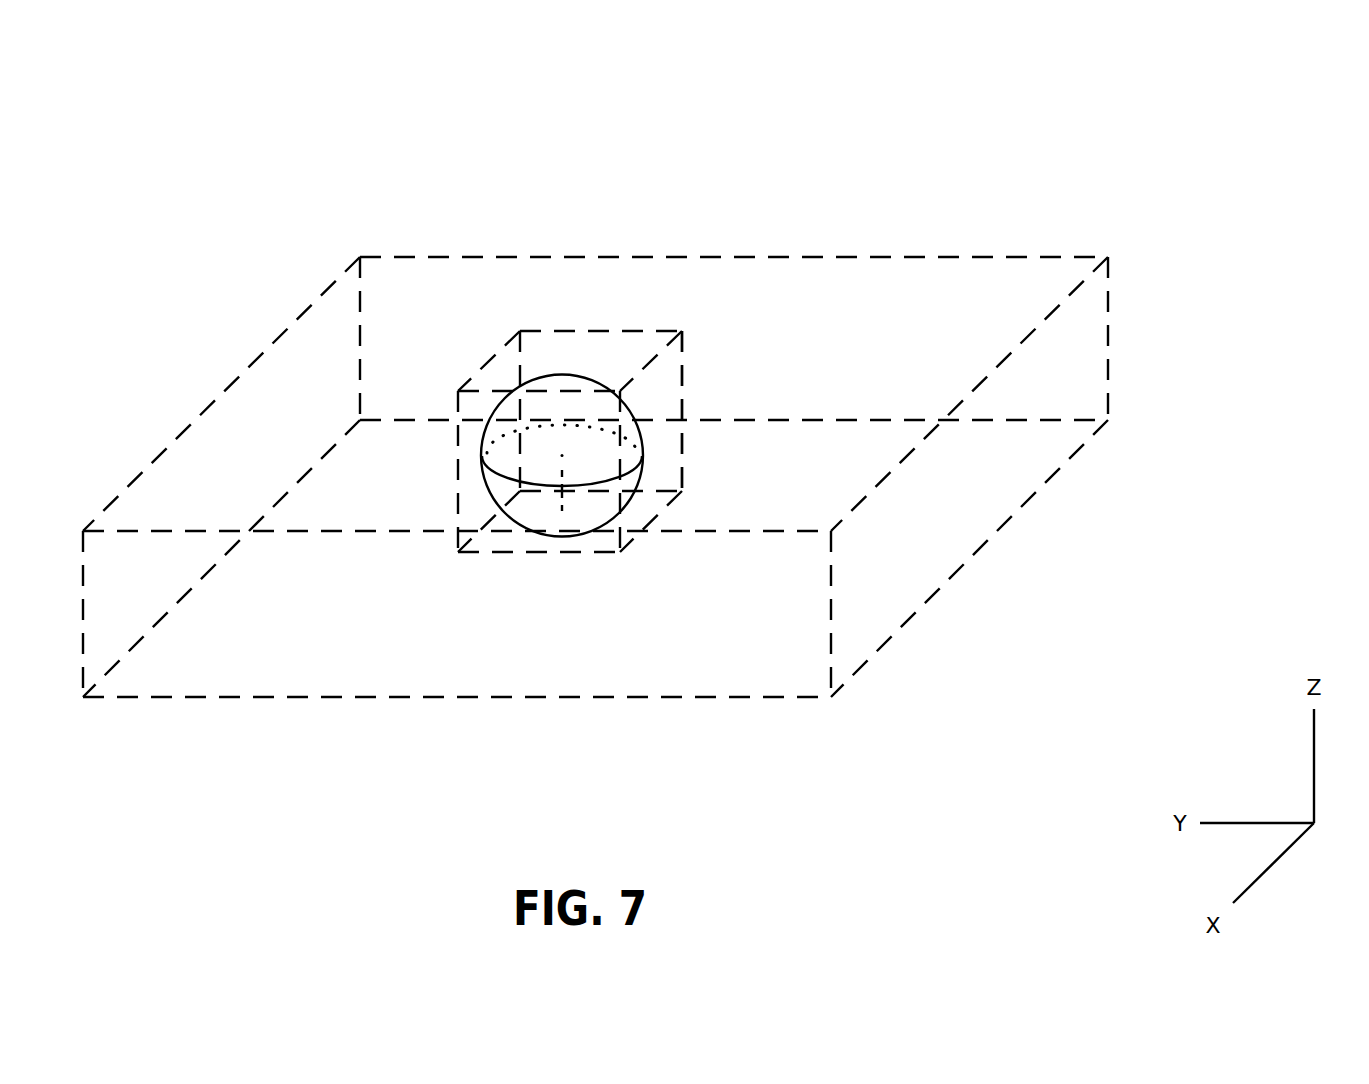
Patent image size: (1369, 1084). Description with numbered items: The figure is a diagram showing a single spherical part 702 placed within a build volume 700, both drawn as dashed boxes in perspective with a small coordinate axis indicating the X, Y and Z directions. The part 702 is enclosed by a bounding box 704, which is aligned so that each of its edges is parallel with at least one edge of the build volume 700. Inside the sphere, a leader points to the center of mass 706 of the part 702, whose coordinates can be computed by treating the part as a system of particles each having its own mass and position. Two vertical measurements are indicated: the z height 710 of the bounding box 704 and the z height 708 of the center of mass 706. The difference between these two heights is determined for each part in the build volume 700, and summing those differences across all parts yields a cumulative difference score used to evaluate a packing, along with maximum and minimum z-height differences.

The build volume 700 is at (317, 297).
The part 702 is at (545, 534).
The bounding box 704 is at (503, 348).
The center of mass 706 is at (562, 470).
The z height of the center of mass 708 is at (562, 505).
The z height of the bounding box 710 is at (684, 368).